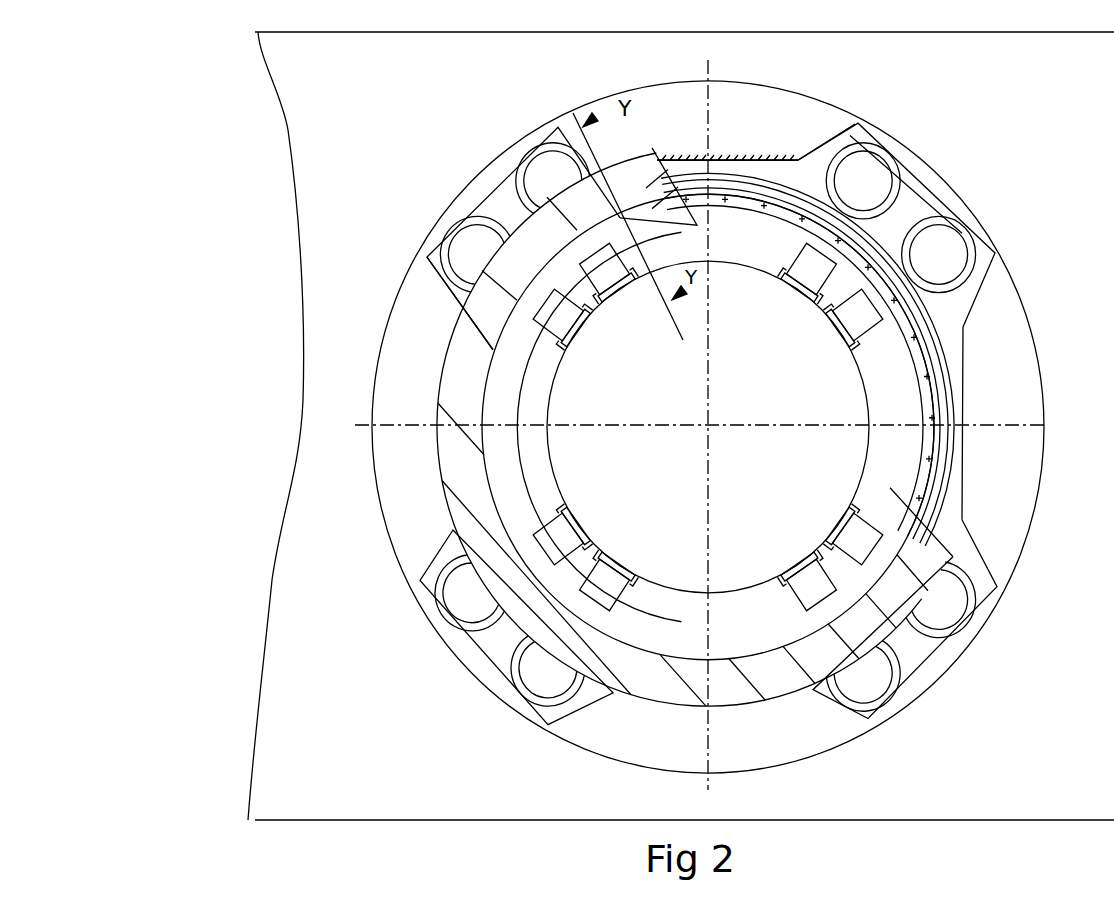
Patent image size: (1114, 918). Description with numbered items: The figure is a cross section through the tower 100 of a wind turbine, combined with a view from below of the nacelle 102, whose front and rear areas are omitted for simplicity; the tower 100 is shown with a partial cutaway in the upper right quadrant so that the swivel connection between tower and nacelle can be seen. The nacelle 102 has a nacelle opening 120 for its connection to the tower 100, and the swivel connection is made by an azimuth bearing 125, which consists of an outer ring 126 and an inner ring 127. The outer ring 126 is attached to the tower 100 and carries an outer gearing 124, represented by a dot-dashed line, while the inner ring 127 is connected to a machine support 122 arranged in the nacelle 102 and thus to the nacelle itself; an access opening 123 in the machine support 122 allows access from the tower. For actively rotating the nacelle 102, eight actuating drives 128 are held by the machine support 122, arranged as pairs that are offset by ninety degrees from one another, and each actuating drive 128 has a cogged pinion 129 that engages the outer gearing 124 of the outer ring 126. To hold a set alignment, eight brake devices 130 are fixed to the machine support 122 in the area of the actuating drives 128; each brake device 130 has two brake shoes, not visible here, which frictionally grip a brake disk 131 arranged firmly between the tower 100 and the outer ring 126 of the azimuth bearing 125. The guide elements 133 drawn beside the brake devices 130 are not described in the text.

The tower 100 is at (440, 402).
The nacelle 102 is at (265, 690).
The nacelle opening 120 is at (387, 533).
The machine support 122 is at (848, 135).
The access opening 123 is at (558, 468).
The outer gearing 124 is at (950, 464).
The azimuth bearing 125 is at (733, 160).
The outer ring 126 is at (948, 398).
The inner ring 127 is at (925, 400).
The actuating drive 128 is at (898, 155).
The cogged pinion 129 is at (882, 188).
The brake device 130 is at (808, 284).
The brake disk 131 is at (654, 630).
The guide element 133 is at (814, 304).